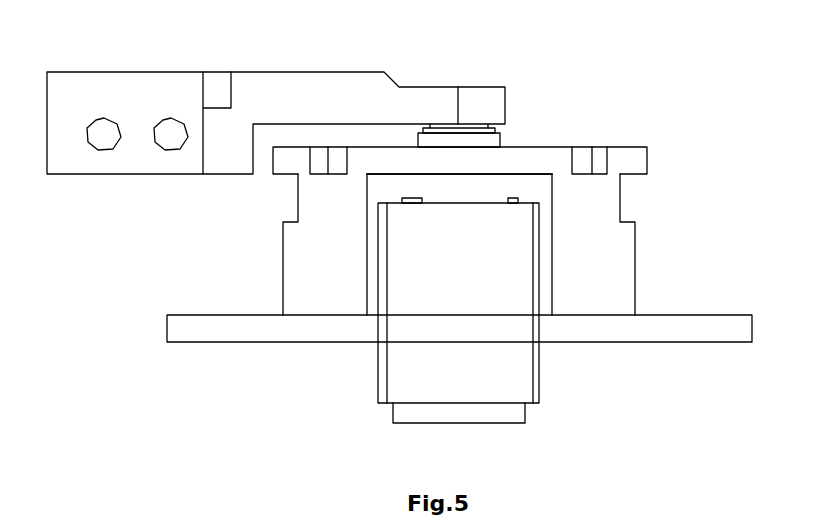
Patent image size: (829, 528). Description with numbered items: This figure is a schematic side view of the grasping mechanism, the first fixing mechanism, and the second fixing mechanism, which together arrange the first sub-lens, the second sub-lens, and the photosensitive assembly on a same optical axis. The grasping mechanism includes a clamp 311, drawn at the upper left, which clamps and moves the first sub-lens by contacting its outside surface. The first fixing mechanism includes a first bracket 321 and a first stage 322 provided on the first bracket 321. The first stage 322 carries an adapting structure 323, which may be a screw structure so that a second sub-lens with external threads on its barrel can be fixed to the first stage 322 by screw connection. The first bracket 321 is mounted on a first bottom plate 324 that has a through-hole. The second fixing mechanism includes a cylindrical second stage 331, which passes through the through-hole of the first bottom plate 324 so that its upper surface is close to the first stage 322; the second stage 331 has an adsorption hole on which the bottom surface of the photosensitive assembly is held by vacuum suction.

The clamp 311 is at (330, 103).
The first bracket 321 is at (310, 257).
The first stage 322 is at (530, 172).
The adapting structure 323 is at (497, 133).
The first bottom plate 324 is at (682, 325).
The second stage 331 is at (490, 285).